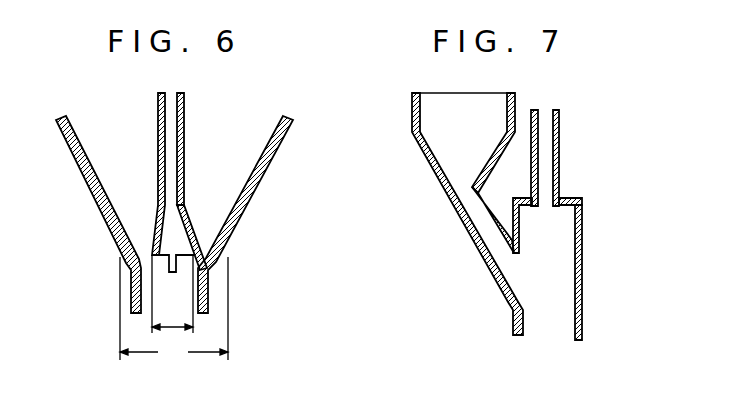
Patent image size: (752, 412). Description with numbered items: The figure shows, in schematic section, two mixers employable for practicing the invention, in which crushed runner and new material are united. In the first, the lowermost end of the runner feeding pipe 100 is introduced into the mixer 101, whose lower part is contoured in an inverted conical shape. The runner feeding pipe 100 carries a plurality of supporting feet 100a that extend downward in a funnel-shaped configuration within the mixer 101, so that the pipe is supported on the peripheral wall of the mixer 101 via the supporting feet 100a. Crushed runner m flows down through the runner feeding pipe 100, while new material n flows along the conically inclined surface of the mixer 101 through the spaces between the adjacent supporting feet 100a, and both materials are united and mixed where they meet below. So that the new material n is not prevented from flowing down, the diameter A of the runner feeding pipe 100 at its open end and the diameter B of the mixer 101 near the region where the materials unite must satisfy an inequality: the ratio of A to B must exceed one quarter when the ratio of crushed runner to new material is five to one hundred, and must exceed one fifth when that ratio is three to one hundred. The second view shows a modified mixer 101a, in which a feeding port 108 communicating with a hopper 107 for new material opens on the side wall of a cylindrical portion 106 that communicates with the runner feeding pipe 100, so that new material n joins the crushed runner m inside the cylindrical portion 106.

In FIG. 6, the runner feeding pipe 100 is at (232, 176).
In FIG. 7, the runner feeding pipe 100 is at (560, 129).
In FIG. 6, the supporting feet 100a is at (196, 231).
In FIG. 6, the mixer 101 is at (263, 168).
In FIG. 7, the mixer 101a is at (583, 283).
In FIG. 7, the cylindrical portion 106 is at (568, 234).
In FIG. 7, the hopper 107 is at (425, 152).
In FIG. 7, the feeding port 108 is at (472, 198).
In FIG. 6, the crushed runner m is at (184, 135).
In FIG. 7, the crushed runner m is at (583, 207).
In FIG. 6, the new material n is at (103, 186).
In FIG. 7, the new material n is at (493, 233).
In FIG. 6, the diameter of the runner feeding pipe A is at (172, 294).
In FIG. 6, the diameter of the mixer B is at (174, 311).